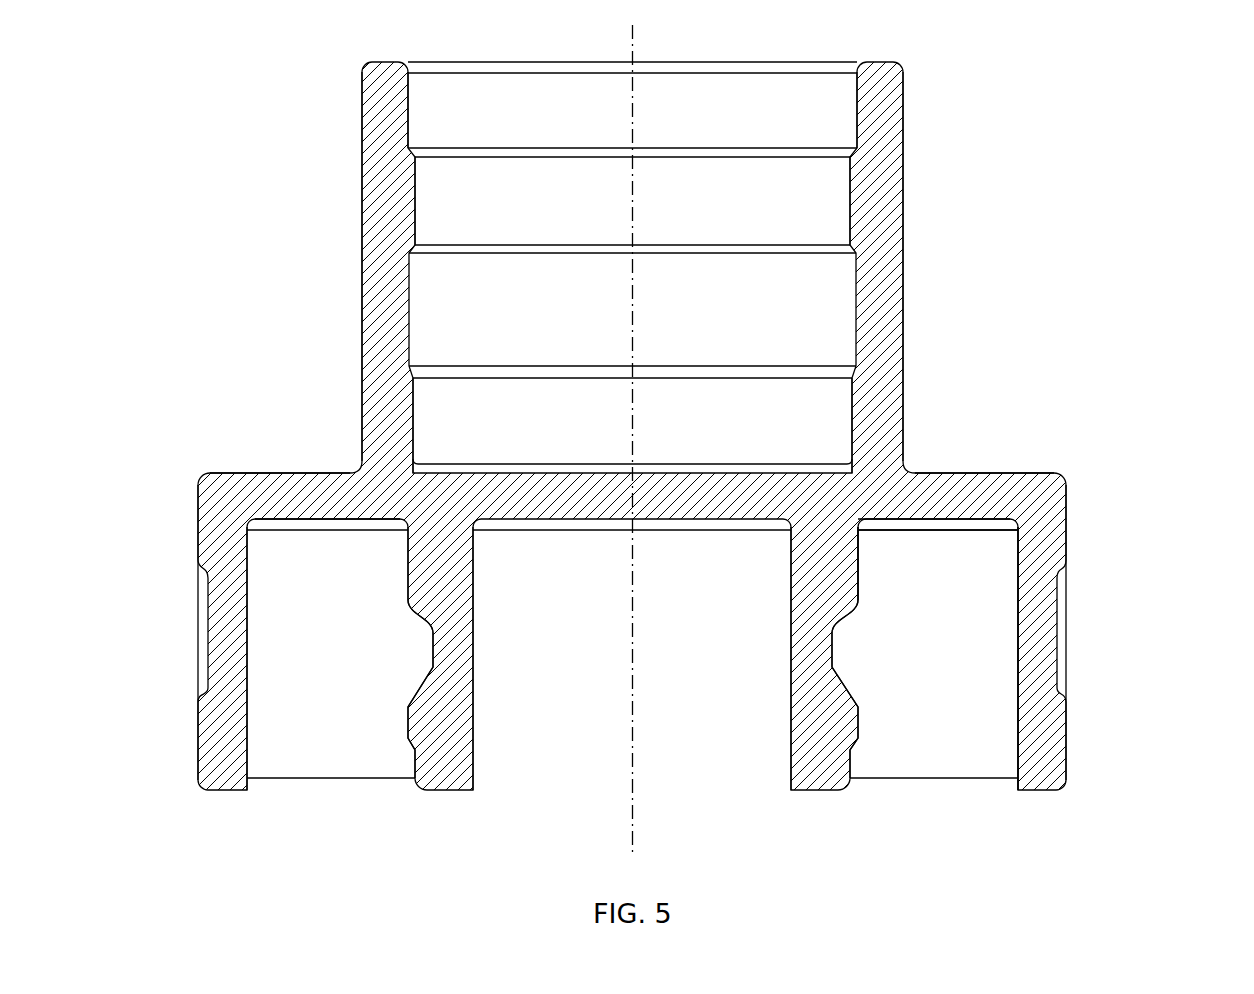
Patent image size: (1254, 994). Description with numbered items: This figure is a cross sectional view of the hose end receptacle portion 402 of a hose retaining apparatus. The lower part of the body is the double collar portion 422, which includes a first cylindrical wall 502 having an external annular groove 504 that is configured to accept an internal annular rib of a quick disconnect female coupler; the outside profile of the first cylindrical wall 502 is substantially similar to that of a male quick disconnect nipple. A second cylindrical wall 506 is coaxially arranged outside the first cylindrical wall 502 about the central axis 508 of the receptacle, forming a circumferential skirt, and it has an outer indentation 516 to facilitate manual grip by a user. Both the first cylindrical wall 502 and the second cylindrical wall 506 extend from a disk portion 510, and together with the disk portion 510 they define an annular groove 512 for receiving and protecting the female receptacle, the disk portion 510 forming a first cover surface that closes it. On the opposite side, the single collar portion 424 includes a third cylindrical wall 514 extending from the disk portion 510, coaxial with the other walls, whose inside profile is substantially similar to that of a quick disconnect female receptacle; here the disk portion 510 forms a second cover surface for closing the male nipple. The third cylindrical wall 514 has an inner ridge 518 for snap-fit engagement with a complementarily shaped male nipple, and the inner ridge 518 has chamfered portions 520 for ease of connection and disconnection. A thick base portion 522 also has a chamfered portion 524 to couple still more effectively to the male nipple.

The hose end receptacle portion 402 is at (1141, 78).
The double collar portion 422 is at (210, 492).
The single collar portion 424 is at (377, 127).
The first cylindrical wall 502 is at (828, 780).
The external annular groove 504 is at (418, 660).
The second cylindrical wall 506 is at (1043, 640).
The central axis 508 is at (634, 190).
The disk portion 510 is at (979, 486).
The annular groove 512 is at (960, 726).
The third cylindrical wall 514 is at (893, 318).
The outer indentation 516 is at (200, 638).
The inner ridge 518 is at (417, 192).
The chamfered portions 520 is at (410, 150).
The thick base portion 522 is at (852, 437).
The chamfered portion 524 is at (452, 378).